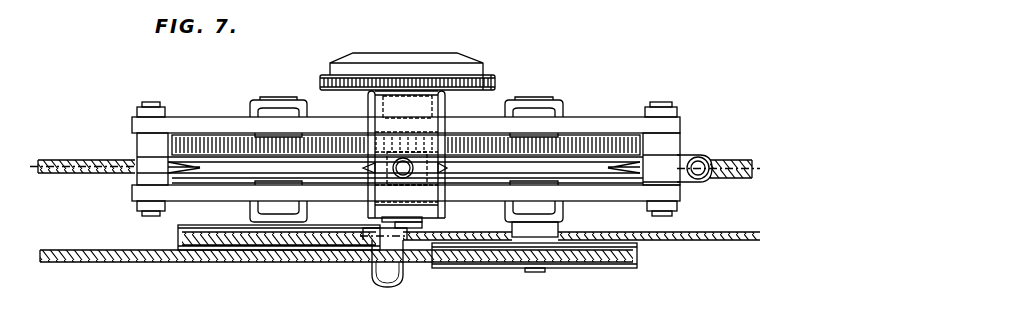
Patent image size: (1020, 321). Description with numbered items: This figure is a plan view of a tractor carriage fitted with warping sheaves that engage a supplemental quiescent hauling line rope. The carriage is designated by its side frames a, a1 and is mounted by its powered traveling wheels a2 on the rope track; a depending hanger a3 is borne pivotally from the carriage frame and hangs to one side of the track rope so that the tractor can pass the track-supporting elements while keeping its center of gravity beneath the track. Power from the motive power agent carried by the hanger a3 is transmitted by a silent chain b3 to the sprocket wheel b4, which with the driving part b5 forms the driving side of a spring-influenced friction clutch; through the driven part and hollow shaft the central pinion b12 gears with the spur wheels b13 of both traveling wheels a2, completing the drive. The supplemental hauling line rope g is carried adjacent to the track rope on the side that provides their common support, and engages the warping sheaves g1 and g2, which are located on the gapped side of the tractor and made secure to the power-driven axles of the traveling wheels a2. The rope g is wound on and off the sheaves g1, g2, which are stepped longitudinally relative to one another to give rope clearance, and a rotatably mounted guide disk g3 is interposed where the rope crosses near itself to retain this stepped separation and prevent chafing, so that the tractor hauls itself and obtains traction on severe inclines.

The side frame a is at (613, 127).
The side frame a1 is at (641, 195).
The powered traveling wheels a2 is at (606, 178).
The depending hanger a3 is at (443, 130).
The silent chain b3 is at (316, 80).
The sprocket wheel b4 is at (492, 80).
The driving part of clutch b5 is at (473, 62).
The central pinion b12 is at (397, 148).
The spur wheels b13 is at (180, 140).
The supplemental quiescent hauling line rope g is at (112, 253).
The warping sheave g1 is at (178, 243).
The warping sheave g2 is at (630, 250).
The rotatably mounted guide disk g3 is at (377, 275).